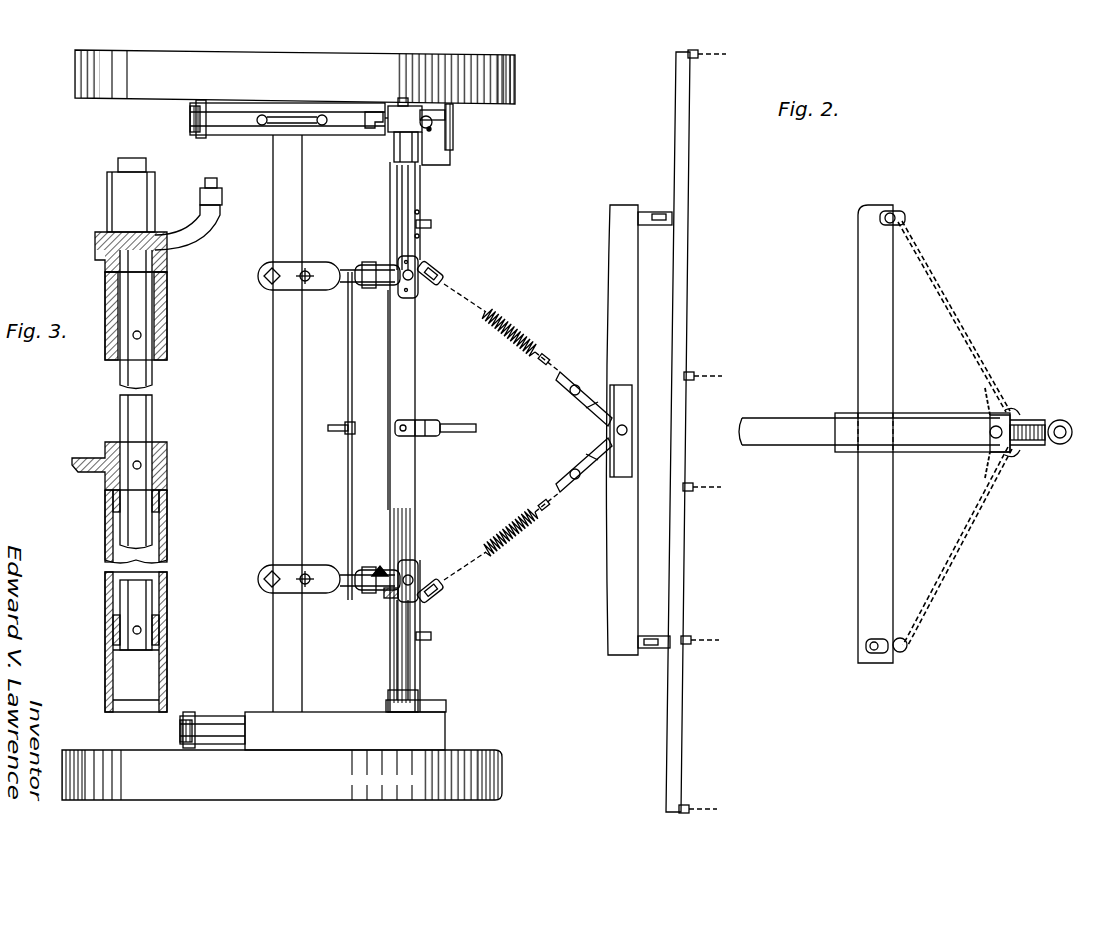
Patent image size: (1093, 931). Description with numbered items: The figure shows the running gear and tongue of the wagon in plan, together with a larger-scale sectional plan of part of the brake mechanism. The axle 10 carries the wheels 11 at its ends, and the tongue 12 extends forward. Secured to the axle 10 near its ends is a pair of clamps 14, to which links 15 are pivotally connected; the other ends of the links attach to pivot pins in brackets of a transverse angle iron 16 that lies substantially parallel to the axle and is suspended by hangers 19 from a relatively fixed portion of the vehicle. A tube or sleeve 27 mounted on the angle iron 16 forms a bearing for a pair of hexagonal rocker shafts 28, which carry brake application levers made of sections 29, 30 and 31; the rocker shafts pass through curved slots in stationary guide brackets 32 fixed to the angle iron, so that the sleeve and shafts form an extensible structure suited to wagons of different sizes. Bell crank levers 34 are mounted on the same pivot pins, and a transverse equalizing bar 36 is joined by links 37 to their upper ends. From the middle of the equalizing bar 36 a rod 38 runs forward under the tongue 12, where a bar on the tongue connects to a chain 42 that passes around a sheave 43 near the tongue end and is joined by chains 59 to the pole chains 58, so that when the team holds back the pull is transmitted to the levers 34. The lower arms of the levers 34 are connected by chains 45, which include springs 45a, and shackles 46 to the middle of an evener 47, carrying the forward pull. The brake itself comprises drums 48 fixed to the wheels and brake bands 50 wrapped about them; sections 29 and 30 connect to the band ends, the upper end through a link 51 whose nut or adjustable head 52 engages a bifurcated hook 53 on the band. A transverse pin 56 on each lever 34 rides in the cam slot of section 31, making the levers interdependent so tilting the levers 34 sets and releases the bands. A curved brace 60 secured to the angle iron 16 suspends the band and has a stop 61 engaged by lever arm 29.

In FIG. 3, the axle 10 is at (273, 383).
In FIG. 3, the wheels 11 is at (505, 82).
In FIG. 2, the tongue 12 is at (776, 418).
In FIG. 3, the clamps 14 is at (266, 288).
In FIG. 3, the links 15 is at (366, 284).
In FIG. 3, the transverse angle iron 16 is at (421, 196).
In FIG. 3, the hangers 19 is at (432, 222).
In FIG. 3, the tube or sleeve 27 is at (412, 530).
In FIG. 3, the rocker shafts 28 is at (396, 200).
In FIG. 3, the lever section 29 is at (218, 236).
In FIG. 3, the lever section 30 is at (150, 196).
In FIG. 3, the lever section 31 is at (88, 458).
In FIG. 3, the stationary guide brackets 32 is at (392, 148).
In FIG. 3, the bell crank levers 34 is at (368, 262).
In FIG. 3, the transverse equalizing bar 36 is at (415, 352).
In FIG. 3, the links 37 is at (403, 288).
In FIG. 3, the rod 38 is at (462, 428).
In FIG. 2, the chain 42 is at (1022, 452).
In FIG. 2, the sheave 43 is at (1030, 425).
In FIG. 3, the chains 45 is at (553, 366).
In FIG. 3, the springs 45a is at (516, 322).
In FIG. 3, the links or shackles 46 is at (580, 431).
In FIG. 3, the evener 47 is at (612, 280).
In FIG. 3, the brake drums 48 is at (233, 136).
In FIG. 3, the brake bands 50 is at (190, 119).
In FIG. 3, the link 51 is at (412, 120).
In FIG. 3, the nut or adjustable head 52 is at (384, 112).
In FIG. 3, the bifurcated hook 53 is at (370, 116).
In FIG. 3, the transverse pin 56 is at (380, 566).
In FIG. 2, the pole chains 58 is at (968, 542).
In FIG. 2, the chains 59 is at (984, 392).
In FIG. 3, the curved brace 60 is at (453, 134).
In FIG. 3, the stop 61 is at (454, 118).